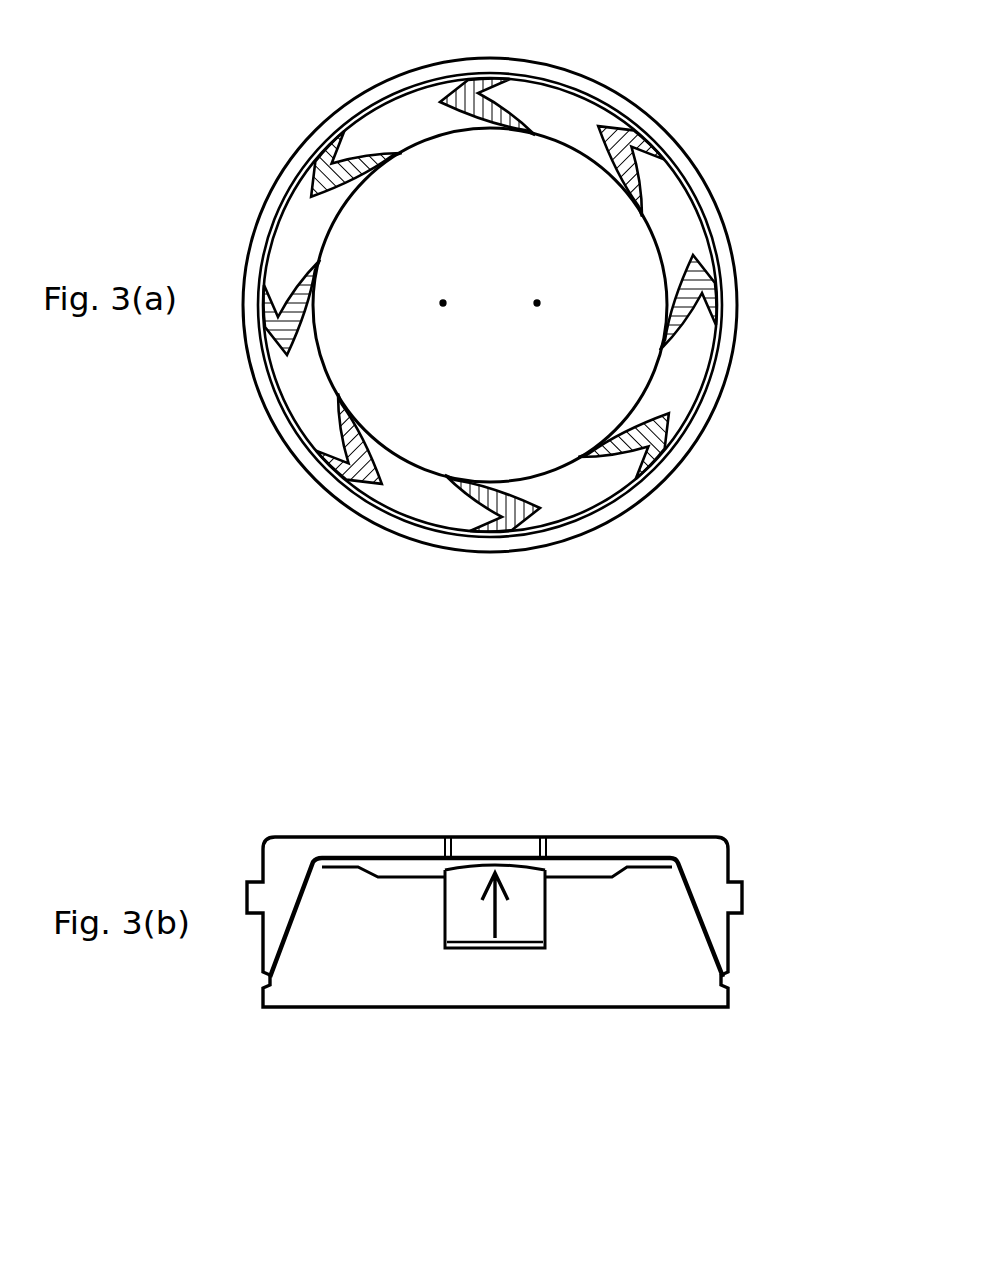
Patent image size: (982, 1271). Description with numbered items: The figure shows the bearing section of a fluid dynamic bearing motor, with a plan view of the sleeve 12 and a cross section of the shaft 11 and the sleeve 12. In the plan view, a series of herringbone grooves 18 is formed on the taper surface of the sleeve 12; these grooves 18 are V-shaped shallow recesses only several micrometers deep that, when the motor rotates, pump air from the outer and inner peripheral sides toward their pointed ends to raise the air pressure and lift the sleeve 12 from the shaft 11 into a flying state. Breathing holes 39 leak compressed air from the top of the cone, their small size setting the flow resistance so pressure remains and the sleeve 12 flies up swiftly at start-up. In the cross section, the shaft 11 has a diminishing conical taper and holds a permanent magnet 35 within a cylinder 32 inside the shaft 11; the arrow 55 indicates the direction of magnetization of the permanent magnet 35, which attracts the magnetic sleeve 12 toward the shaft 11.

In FIG. 3B, the shaft 11 is at (660, 935).
In FIG. 3A, the sleeve 12 is at (598, 86).
In FIG. 3B, the sleeve 12 is at (702, 887).
In FIG. 3A, the herringbone grooves 18 is at (612, 462).
In FIG. 3B, the cylinder 32 is at (545, 949).
In FIG. 3B, the permanent magnet 35 is at (518, 927).
In FIG. 3A, the breathing holes 39 is at (541, 300).
In FIG. 3B, the breathing holes 39 is at (547, 835).
In FIG. 3B, the direction of magnetization 55 is at (497, 917).